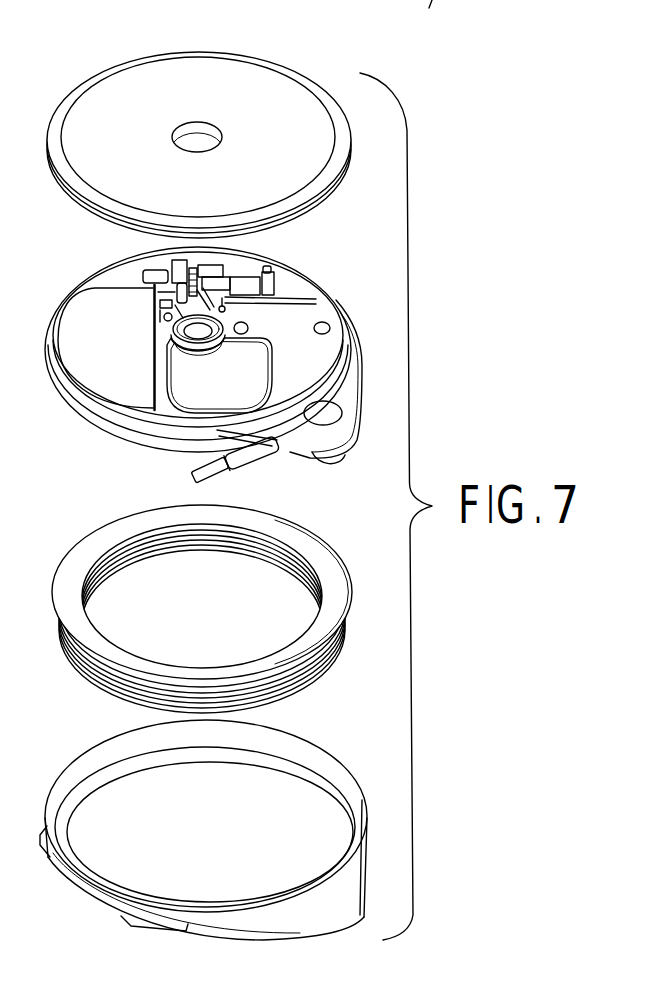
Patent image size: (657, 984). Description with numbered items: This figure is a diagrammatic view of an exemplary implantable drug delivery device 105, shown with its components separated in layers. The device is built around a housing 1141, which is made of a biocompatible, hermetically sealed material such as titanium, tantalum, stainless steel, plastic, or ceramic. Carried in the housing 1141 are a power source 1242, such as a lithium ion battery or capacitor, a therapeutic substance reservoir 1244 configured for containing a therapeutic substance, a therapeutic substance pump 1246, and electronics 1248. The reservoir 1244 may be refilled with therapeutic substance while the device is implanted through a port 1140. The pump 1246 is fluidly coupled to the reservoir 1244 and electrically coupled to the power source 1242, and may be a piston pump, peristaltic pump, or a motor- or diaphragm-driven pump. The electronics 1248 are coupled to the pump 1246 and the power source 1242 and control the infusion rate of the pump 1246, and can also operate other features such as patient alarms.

The implantable drug delivery device 105 is at (452, 418).
The housing 1141 is at (60, 103).
The port 1140 is at (193, 338).
The power source 1242 is at (94, 366).
The therapeutic substance pump 1246 is at (209, 398).
The electronics 1248 is at (217, 267).
The therapeutic substance reservoir 1244 is at (358, 517).